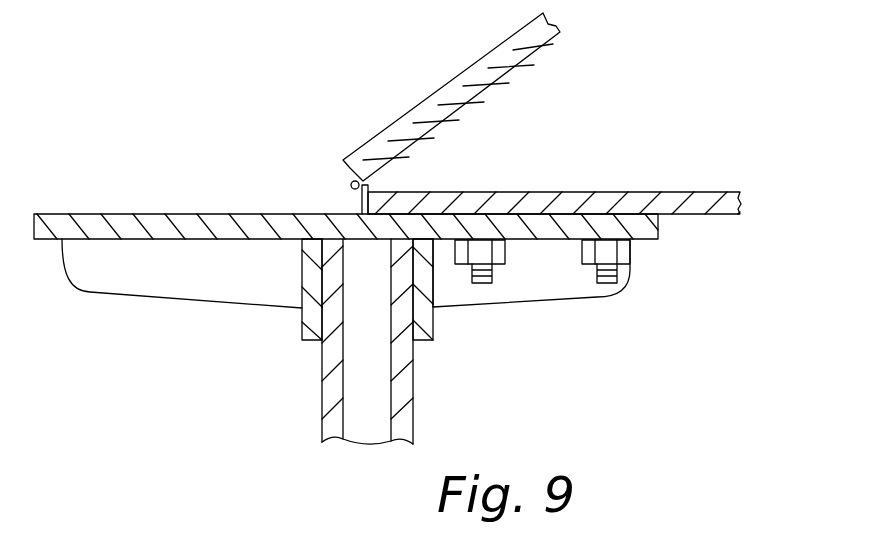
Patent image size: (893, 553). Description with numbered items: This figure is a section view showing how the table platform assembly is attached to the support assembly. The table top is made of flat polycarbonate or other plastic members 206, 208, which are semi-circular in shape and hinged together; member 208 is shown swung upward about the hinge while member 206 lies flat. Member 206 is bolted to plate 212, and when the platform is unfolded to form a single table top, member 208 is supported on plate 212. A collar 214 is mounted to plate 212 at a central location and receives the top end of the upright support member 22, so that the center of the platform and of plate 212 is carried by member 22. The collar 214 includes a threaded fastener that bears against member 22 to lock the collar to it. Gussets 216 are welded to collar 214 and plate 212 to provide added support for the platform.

The member 22 is at (413, 378).
The member 206 is at (612, 192).
The member 208 is at (512, 68).
The plate 212 is at (663, 230).
The collar 214 is at (298, 320).
The gussets 216 is at (172, 292).